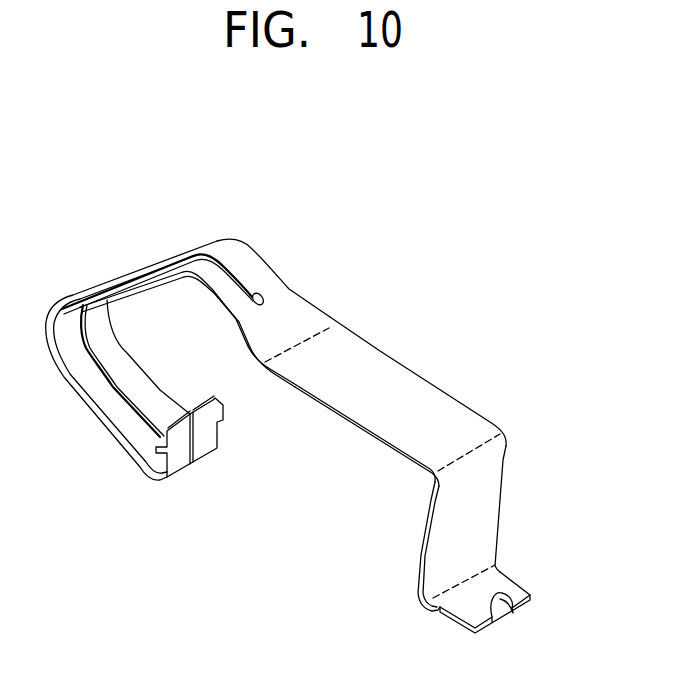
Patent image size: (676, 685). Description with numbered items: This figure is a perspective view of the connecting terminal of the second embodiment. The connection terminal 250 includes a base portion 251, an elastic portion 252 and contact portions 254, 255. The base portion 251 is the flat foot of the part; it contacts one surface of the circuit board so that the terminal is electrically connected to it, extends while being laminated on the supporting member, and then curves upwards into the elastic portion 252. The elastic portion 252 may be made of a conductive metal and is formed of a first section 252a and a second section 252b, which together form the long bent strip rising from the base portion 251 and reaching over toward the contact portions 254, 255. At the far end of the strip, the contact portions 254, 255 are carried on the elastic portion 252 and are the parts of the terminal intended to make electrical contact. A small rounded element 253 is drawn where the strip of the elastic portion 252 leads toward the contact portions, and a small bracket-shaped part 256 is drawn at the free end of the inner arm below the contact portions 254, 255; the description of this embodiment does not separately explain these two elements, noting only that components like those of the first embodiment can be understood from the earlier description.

The connection terminal 250 is at (490, 242).
The base portion 251 is at (511, 589).
The elastic portion 252 is at (502, 332).
The first section 252a is at (414, 378).
The second section 252b is at (318, 309).
The rounded end 253 is at (264, 294).
The contact portion 254 is at (137, 272).
The contact portion 255 is at (183, 254).
The tab 256 is at (150, 456).